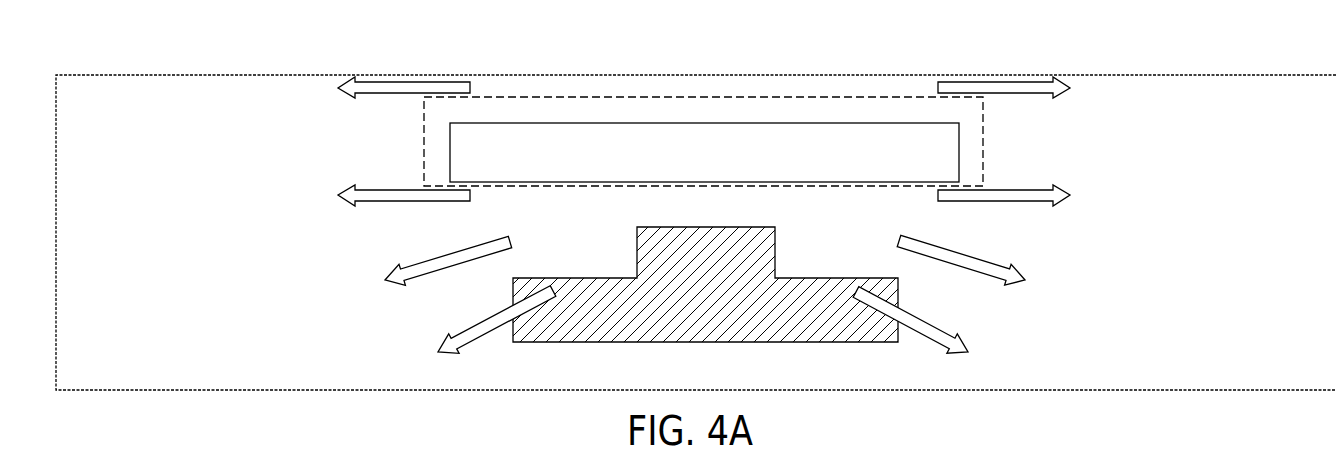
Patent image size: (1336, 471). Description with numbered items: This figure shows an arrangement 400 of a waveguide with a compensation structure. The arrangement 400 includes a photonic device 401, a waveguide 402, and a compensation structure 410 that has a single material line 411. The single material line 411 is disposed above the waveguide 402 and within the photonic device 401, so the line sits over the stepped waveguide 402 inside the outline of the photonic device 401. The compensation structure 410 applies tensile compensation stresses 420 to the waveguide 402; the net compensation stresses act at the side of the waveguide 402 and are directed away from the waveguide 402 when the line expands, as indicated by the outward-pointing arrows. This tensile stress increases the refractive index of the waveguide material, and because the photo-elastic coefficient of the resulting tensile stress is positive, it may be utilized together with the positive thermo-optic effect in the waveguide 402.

The arrangement 400 is at (1218, 56).
The photonic device 401 is at (1300, 358).
The waveguide 402 is at (715, 306).
The compensation structure 410 is at (818, 95).
The single material line 411 is at (743, 163).
The tensile compensation stresses 420 is at (470, 338).